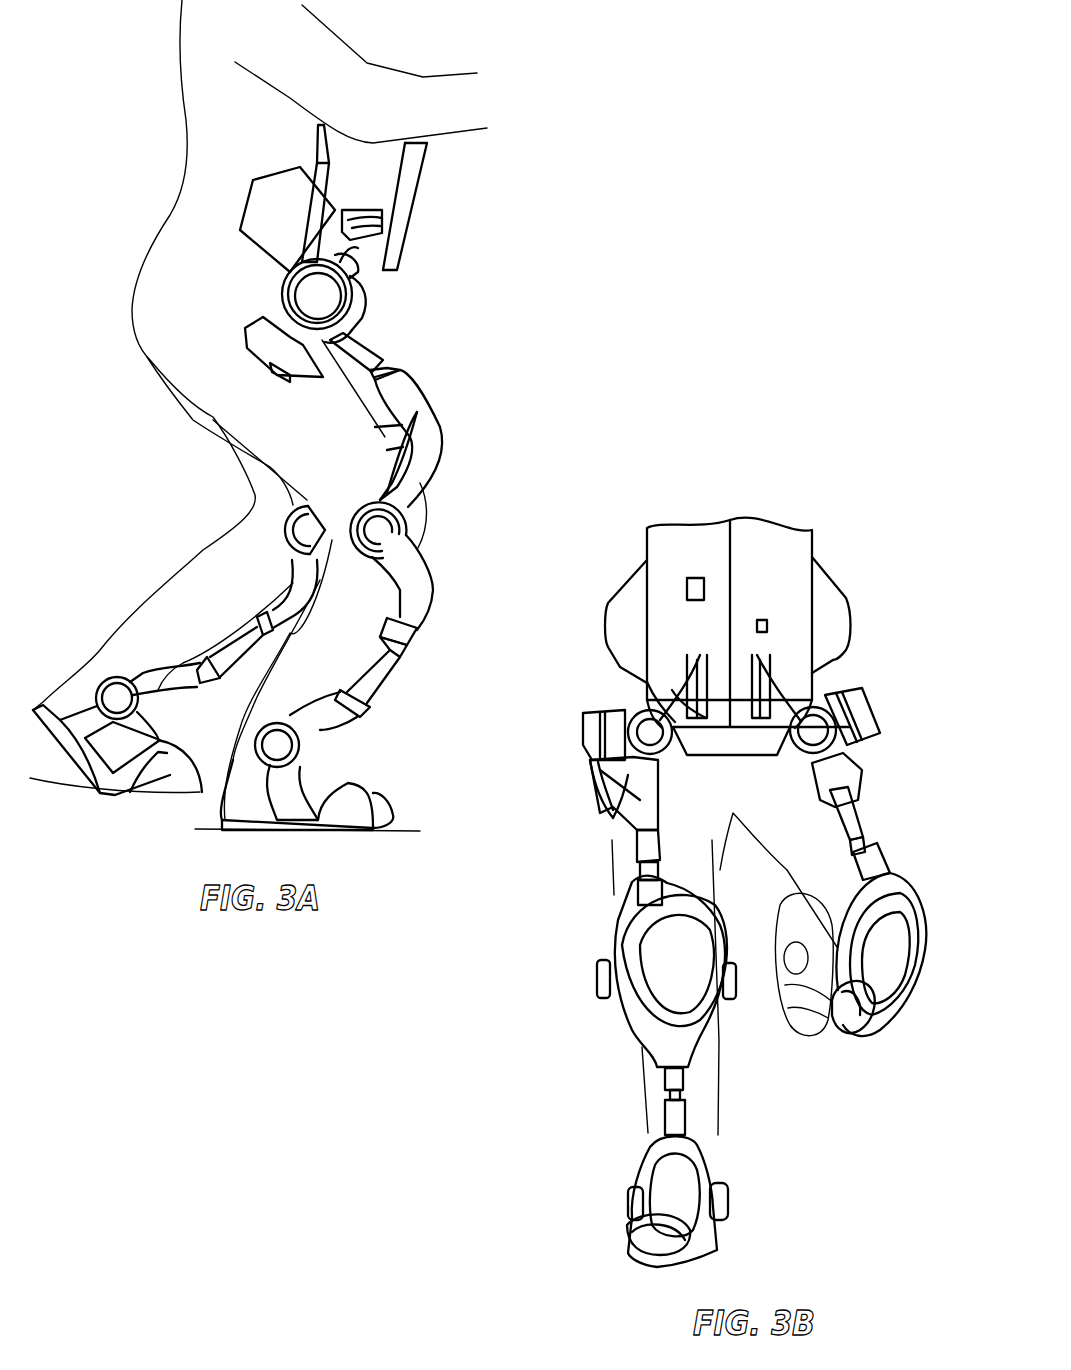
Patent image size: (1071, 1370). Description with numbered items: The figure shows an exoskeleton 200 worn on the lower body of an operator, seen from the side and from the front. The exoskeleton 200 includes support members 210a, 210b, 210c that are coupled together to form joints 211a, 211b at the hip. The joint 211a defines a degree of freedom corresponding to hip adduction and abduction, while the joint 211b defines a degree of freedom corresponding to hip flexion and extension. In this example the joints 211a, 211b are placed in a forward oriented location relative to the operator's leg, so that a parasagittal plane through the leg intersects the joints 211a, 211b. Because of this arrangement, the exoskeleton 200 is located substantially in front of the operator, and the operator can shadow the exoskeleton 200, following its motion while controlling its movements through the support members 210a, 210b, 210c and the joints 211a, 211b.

In FIG. 3A, the exoskeleton 200 is at (455, 192).
In FIG. 3B, the exoskeleton 200 is at (874, 566).
In FIG. 3A, the support member 210a is at (350, 237).
In FIG. 3B, the support member 210a is at (680, 705).
In FIG. 3B, the support member 210b is at (607, 708).
In FIG. 3A, the support member 210c is at (353, 327).
In FIG. 3B, the support member 210c is at (630, 790).
In FIG. 3A, the joint 211a is at (365, 282).
In FIG. 3B, the joint 211a is at (603, 787).
In FIG. 3A, the joint 211b is at (360, 303).
In FIG. 3B, the joint 211b is at (578, 762).